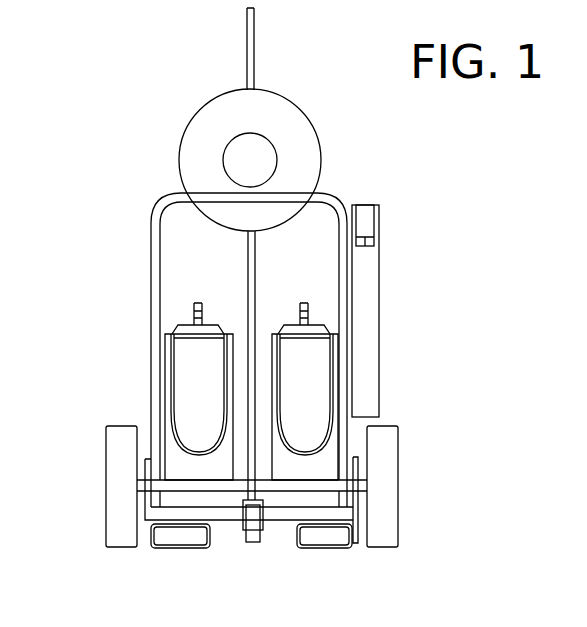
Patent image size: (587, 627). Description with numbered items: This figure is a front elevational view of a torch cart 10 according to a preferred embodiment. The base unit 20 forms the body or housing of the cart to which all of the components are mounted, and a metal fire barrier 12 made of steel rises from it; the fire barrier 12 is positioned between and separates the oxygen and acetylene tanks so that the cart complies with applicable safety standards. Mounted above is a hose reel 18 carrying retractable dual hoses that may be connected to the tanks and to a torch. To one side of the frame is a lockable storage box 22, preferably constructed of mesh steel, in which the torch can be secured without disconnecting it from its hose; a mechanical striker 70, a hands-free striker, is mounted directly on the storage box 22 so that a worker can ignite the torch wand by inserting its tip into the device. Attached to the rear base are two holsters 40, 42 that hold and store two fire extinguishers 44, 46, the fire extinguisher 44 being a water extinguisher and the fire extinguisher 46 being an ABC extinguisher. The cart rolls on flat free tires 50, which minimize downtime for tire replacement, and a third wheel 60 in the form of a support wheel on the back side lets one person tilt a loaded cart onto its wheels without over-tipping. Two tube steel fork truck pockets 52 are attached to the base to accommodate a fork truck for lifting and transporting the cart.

The torch cart 10 is at (120, 288).
The fire barrier 12 is at (255, 32).
The hose reel 18 is at (303, 128).
The base unit 20 is at (166, 200).
The lockable storage box 22 is at (380, 314).
The mechanical striker 70 is at (366, 222).
The holster 40 is at (171, 446).
The holster 42 is at (331, 446).
The fire extinguisher 44 is at (212, 379).
The fire extinguisher 46 is at (318, 379).
The flat free tires 50 is at (106, 478).
The fork truck pockets 52 is at (171, 550).
The third wheel 60 is at (250, 544).